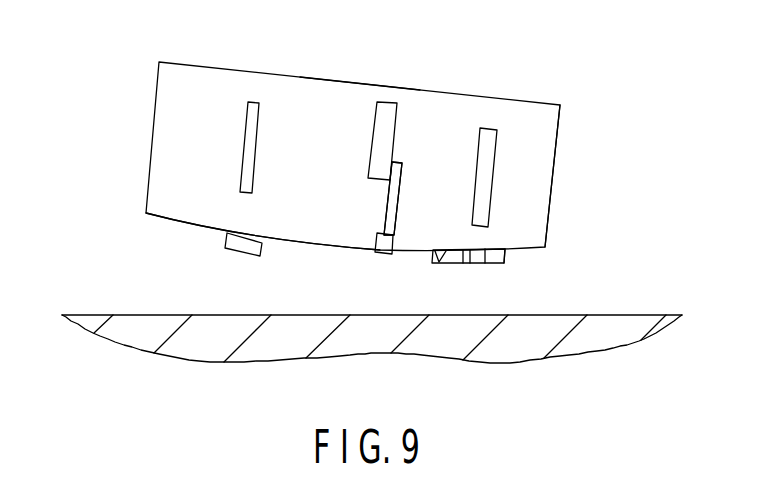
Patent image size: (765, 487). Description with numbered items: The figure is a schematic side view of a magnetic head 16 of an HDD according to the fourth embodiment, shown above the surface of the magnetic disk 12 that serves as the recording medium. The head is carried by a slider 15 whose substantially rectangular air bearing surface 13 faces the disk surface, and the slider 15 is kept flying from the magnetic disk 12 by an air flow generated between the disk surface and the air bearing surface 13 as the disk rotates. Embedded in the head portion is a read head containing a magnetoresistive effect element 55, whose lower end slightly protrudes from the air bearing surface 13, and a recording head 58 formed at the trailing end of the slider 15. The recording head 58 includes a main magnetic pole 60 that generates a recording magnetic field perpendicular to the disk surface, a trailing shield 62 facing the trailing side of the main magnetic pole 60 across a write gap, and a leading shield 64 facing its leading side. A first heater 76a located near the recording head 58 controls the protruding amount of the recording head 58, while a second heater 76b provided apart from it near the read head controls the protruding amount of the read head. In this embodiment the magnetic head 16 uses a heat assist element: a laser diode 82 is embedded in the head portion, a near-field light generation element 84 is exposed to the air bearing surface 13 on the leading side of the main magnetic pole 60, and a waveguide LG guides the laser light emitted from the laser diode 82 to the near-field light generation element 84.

The magnetic head 16 is at (142, 92).
The slider 15 is at (435, 108).
The recording head 58 is at (525, 232).
The air bearing surface 13 is at (306, 246).
The second heater 76b is at (246, 122).
The first heater 76a is at (478, 148).
The laser diode 82 is at (373, 133).
The waveguide LG is at (388, 204).
The near-field light generation element 84 is at (386, 249).
The magnetoresistive effect element 55 is at (243, 245).
The main magnetic pole 60 is at (470, 265).
The trailing shield 62 is at (493, 262).
The leading shield 64 is at (437, 253).
The magnetic disk 12 is at (578, 340).